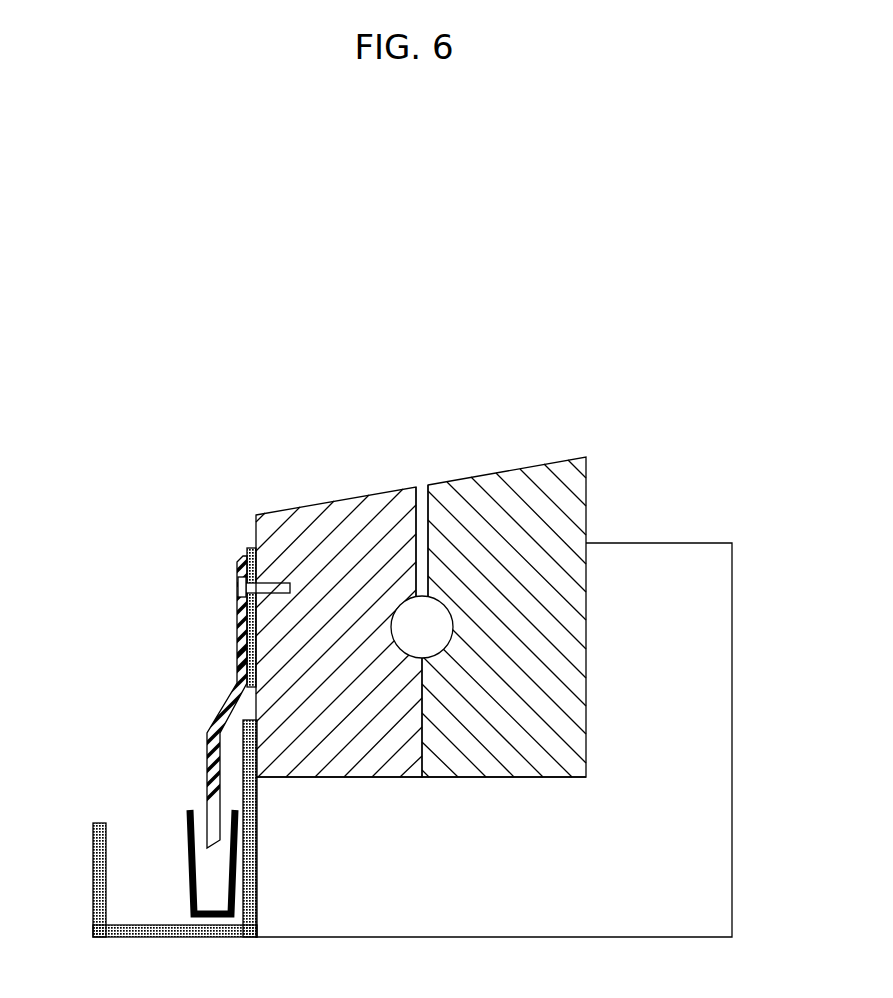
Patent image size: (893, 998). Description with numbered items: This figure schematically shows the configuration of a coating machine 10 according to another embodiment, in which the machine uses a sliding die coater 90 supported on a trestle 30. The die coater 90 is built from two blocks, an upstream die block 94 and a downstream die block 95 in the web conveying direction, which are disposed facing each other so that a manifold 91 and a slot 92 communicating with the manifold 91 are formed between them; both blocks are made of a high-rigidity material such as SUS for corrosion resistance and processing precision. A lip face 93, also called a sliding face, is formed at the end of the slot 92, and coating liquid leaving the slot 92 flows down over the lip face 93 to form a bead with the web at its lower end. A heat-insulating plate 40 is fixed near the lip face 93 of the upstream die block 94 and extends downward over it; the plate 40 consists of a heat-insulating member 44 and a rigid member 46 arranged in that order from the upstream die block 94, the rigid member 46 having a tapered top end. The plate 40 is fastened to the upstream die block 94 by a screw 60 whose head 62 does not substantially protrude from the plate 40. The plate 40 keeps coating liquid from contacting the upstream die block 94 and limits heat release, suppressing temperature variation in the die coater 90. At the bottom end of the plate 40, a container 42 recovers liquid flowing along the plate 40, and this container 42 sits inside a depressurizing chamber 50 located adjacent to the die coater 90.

The coating machine 10 is at (440, 315).
The trestle 30 is at (720, 836).
The heat-insulating plate 40 is at (186, 691).
The container 42 is at (187, 865).
The heat-insulating member 44 is at (238, 642).
The rigid member 46 is at (238, 668).
The depressurizing chamber 50 is at (93, 860).
The screw 60 is at (225, 590).
The head 62 is at (238, 592).
The sliding die coater 90 is at (474, 615).
The manifold 91 is at (437, 620).
The slot 92 is at (421, 517).
The lip face 93 is at (334, 501).
The upstream die block 94 is at (330, 777).
The downstream die block 95 is at (517, 777).